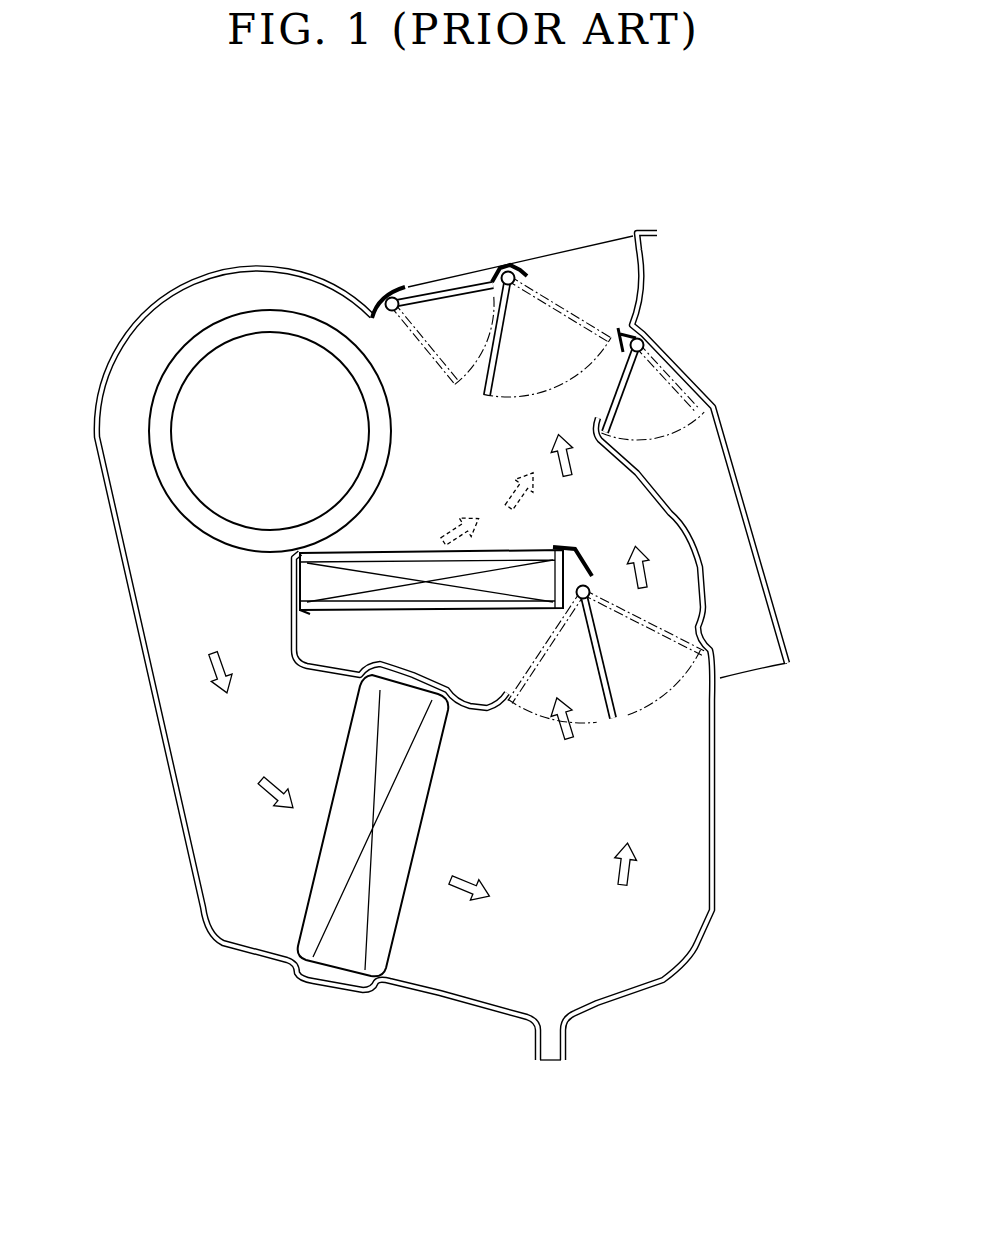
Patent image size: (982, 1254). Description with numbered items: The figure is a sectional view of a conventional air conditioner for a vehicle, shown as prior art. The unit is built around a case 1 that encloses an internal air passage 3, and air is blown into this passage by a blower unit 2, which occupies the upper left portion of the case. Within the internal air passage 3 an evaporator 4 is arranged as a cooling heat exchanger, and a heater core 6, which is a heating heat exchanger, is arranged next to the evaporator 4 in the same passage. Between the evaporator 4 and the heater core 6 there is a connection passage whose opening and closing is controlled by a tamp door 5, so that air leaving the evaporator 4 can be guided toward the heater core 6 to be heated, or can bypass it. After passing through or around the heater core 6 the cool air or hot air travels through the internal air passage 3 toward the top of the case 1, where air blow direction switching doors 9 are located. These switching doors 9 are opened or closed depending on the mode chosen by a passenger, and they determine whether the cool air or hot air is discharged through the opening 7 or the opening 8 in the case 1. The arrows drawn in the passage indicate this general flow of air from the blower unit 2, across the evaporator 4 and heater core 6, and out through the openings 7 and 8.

The case 1 is at (142, 780).
The blower unit 2 is at (178, 332).
The internal air passage 3 is at (571, 853).
The evaporator 4 is at (333, 973).
The tamp door 5 is at (612, 688).
The heater core 6 is at (313, 582).
The opening 7 is at (593, 248).
The opening 8 is at (423, 281).
The air blow direction switching doors 9 is at (500, 305).